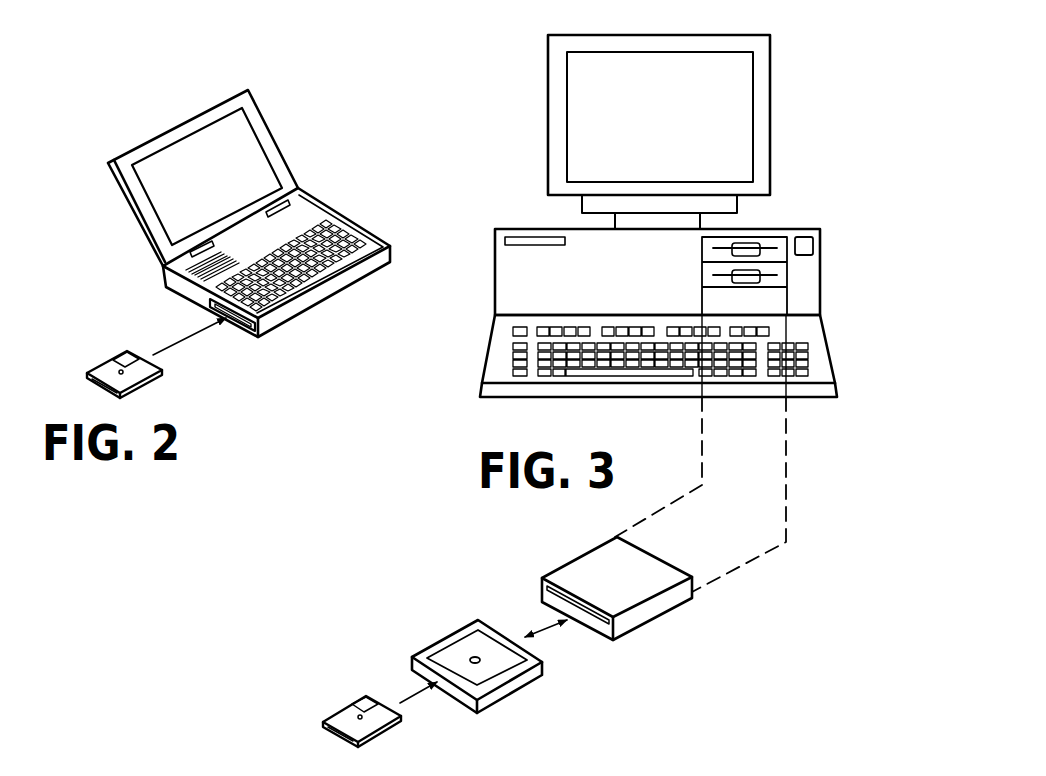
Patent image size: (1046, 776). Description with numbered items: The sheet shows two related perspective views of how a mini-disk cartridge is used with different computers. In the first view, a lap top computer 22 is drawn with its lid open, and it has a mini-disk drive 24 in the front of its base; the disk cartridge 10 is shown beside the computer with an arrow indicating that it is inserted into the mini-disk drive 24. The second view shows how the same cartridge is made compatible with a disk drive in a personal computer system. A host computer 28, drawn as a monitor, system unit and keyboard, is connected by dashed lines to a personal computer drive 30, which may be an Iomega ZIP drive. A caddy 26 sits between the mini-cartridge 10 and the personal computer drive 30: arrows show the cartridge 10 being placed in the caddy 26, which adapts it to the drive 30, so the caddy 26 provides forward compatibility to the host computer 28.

In FIG. 2, the disk cartridge 10 is at (107, 362).
In FIG. 3, the disk cartridge 10 is at (345, 713).
In FIG. 2, the lap top computer 22 is at (337, 285).
In FIG. 2, the mini-disk drive 24 is at (237, 328).
In FIG. 3, the caddy 26 is at (457, 633).
In FIG. 3, the host computer 28 is at (775, 230).
In FIG. 3, the personal computer drive 30 is at (583, 553).